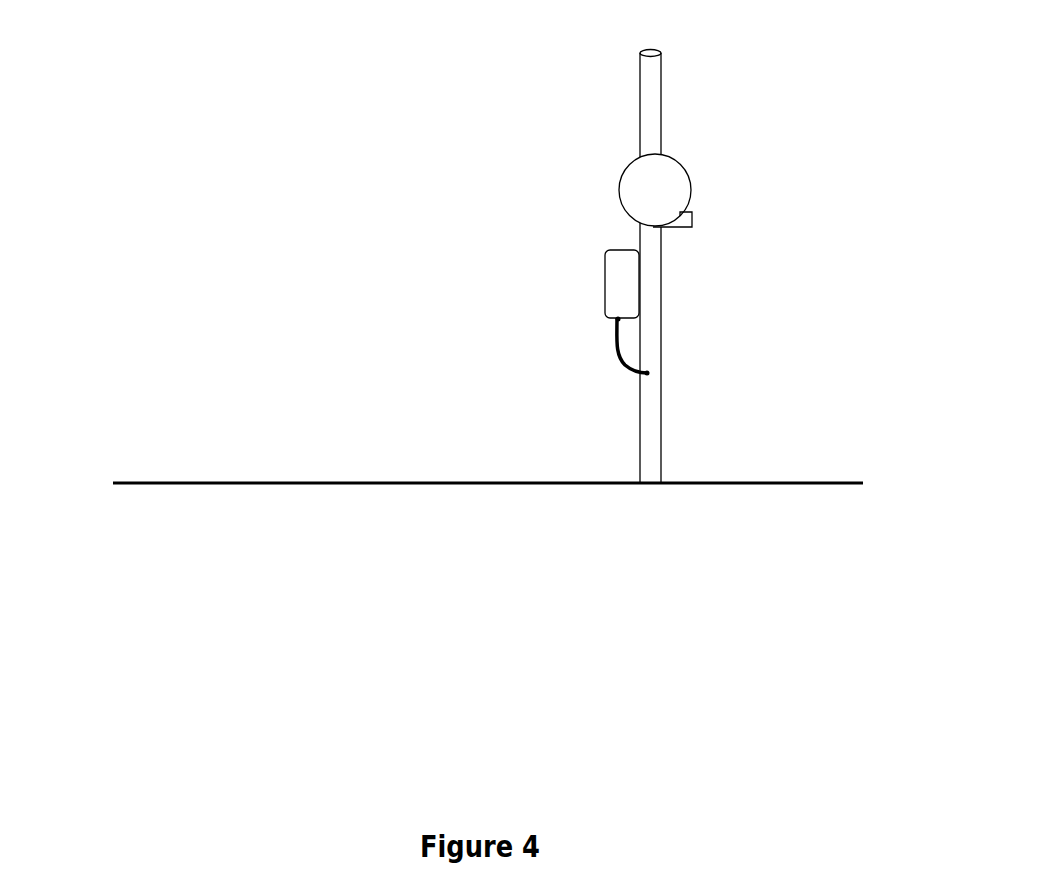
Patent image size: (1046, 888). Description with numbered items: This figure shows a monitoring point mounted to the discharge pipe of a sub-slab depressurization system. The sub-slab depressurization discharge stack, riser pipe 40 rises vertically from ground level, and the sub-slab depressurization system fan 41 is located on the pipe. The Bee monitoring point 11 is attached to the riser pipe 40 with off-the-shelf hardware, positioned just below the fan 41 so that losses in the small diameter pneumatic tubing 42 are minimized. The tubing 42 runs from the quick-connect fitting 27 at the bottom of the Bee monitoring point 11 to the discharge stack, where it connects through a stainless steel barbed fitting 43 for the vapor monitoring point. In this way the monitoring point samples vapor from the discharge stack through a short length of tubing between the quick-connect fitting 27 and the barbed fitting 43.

The sub-slab depressurization discharge stack, riser pipe 40 is at (629, 80).
The sub-slab depressurization system fan 41 is at (610, 192).
The Bee monitoring point 11 is at (595, 288).
The pneumatic tubing 42 is at (602, 362).
The quick-connect fitting 27 is at (636, 319).
The barbed fitting for vapor monitoring point 43 is at (659, 373).